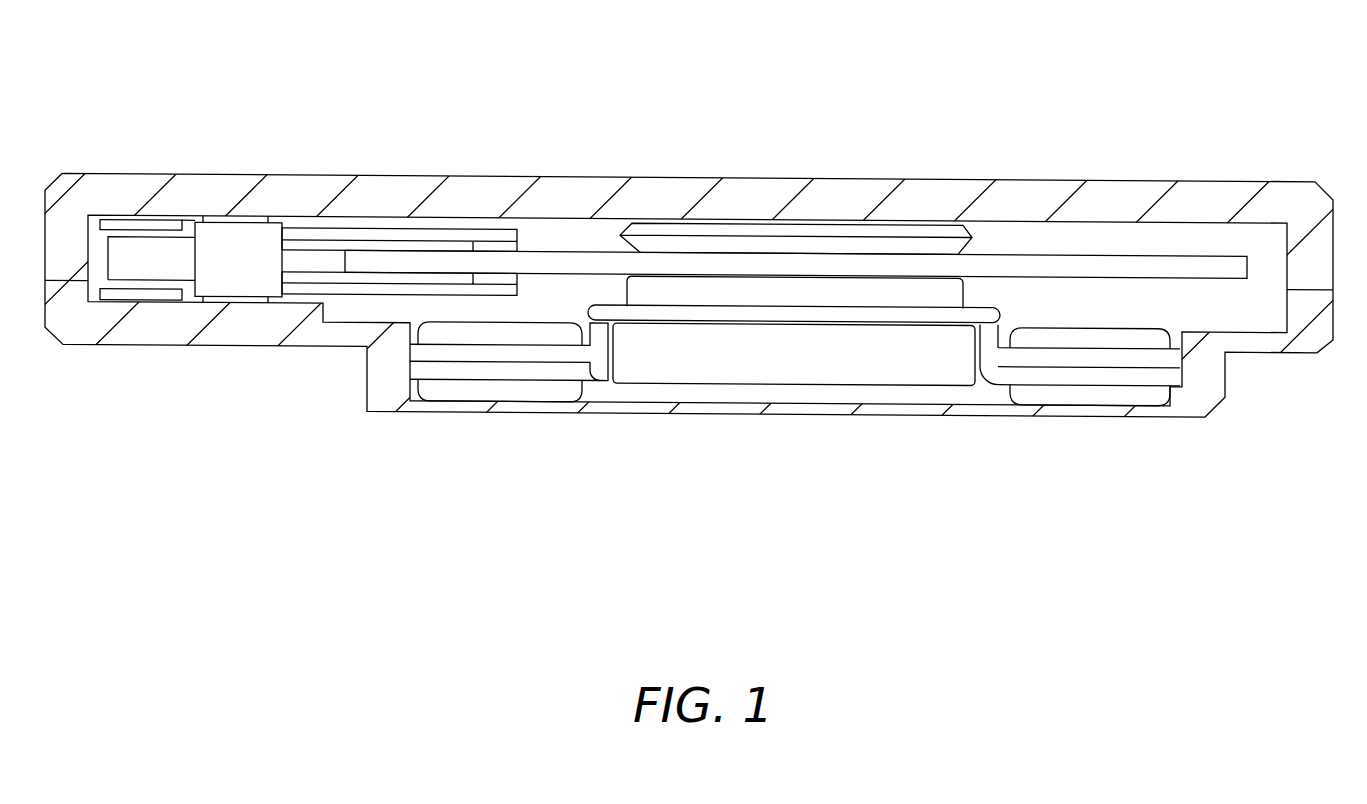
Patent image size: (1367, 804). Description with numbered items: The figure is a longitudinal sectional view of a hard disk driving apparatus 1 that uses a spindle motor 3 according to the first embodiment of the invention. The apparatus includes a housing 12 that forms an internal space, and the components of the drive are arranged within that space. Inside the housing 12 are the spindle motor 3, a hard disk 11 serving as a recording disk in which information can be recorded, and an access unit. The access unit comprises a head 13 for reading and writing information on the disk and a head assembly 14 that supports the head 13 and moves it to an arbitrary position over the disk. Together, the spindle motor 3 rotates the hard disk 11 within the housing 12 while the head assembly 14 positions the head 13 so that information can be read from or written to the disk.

The hard disk driving apparatus 1 is at (1287, 431).
The spindle motor 3 is at (900, 433).
The hard disk 11 is at (1075, 262).
The housing 12 is at (820, 198).
The head 13 is at (497, 243).
The head assembly 14 is at (367, 302).